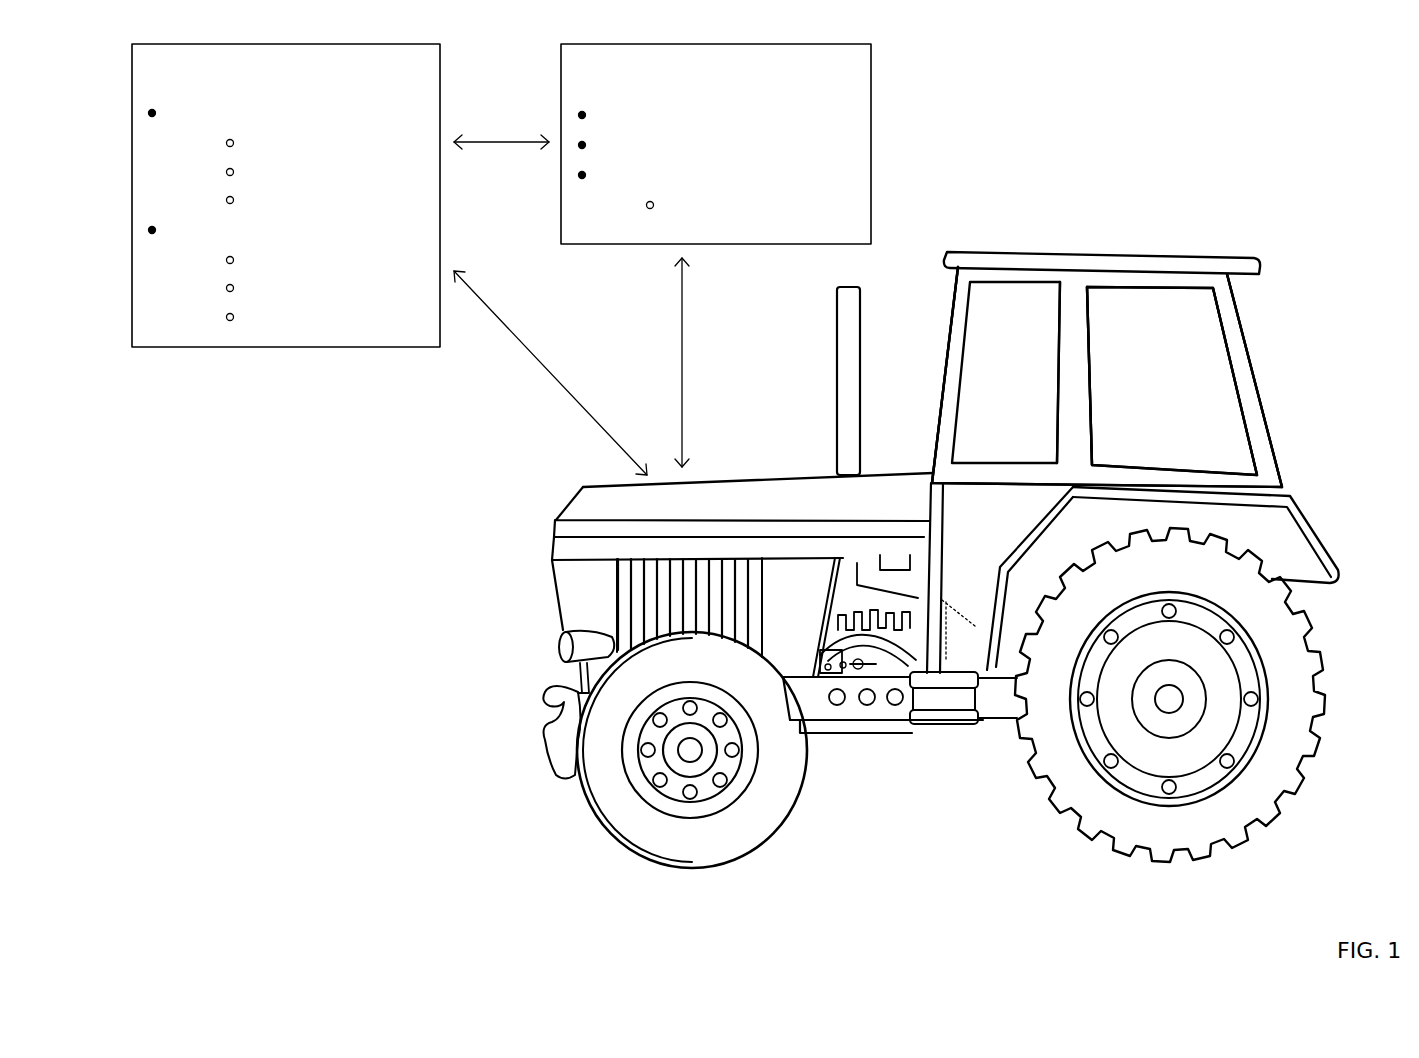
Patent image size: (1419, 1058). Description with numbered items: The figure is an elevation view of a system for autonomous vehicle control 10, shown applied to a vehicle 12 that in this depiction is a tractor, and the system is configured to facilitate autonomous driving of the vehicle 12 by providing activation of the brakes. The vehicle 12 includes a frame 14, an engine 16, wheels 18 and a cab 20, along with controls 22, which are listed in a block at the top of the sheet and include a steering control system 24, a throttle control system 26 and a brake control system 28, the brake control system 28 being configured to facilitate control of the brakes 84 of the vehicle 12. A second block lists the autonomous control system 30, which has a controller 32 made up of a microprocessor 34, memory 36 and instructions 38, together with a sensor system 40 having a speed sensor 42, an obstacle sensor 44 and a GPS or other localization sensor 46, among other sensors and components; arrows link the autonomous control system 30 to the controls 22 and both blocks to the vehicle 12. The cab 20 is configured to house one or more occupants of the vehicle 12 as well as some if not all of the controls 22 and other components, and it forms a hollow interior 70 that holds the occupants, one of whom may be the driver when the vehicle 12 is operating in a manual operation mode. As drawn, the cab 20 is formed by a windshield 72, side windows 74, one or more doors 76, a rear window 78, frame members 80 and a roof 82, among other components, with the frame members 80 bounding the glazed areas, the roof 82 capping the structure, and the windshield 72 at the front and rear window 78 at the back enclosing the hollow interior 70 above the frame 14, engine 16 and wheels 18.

The system for autonomous vehicle control 10 is at (1312, 143).
The vehicle 12 is at (582, 482).
The frame 14 is at (808, 702).
The engine 16 is at (870, 623).
The wheels 18 is at (782, 802).
The cab 20 is at (948, 290).
The controls 22 is at (716, 144).
The steering control system 24 is at (708, 115).
The throttle control system 26 is at (707, 145).
The brake control system 28 is at (975, 767).
The autonomous control system 30 is at (286, 195).
The controller 32 is at (220, 113).
The microprocessor 34 is at (315, 143).
The memory 36 is at (285, 172).
The instructions 38 is at (299, 200).
The sensor system 40 is at (238, 230).
The speed sensor 42 is at (310, 260).
The obstacle sensor 44 is at (325, 288).
The GPS or other localization sensor 46 is at (301, 317).
The hollow interior 70 is at (1186, 318).
The windshield 72 is at (948, 374).
The side windows 74 is at (1163, 383).
The doors 76 is at (981, 472).
The rear window 78 is at (1256, 384).
The frame members 80 is at (1074, 338).
The roof 82 is at (1171, 247).
The brakes 84 is at (703, 205).